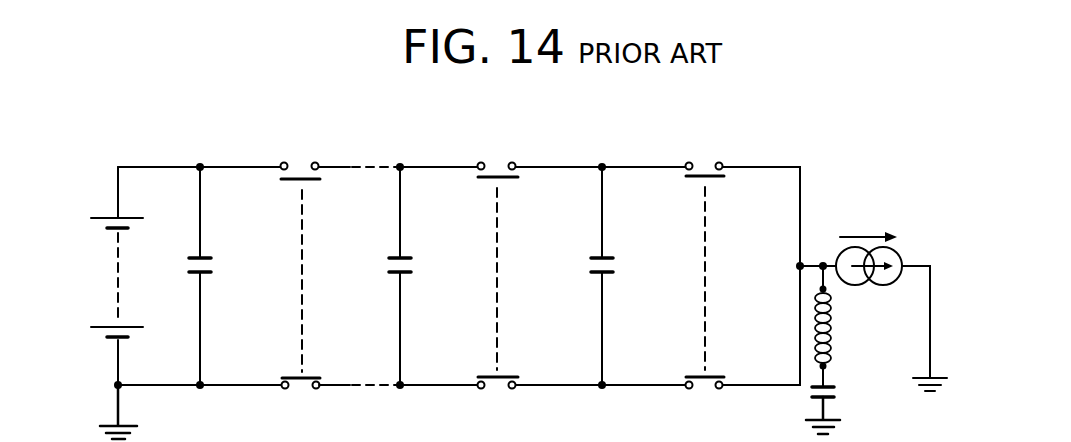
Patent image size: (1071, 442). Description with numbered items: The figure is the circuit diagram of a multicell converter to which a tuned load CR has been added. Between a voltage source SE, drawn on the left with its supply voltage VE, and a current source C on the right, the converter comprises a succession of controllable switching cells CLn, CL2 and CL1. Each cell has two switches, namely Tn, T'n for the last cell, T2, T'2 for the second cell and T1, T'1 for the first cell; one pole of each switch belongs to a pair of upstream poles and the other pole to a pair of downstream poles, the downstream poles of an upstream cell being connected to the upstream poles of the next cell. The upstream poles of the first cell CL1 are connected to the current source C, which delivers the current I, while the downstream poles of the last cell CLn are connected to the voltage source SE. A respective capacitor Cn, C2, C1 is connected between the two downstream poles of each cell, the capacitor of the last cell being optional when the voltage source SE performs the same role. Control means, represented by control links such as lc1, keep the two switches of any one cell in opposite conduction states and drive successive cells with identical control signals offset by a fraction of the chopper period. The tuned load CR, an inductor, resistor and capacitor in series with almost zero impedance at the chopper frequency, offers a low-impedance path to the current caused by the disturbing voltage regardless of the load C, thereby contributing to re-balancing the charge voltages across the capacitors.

The supply voltage VE is at (119, 197).
The voltage source SE is at (117, 262).
The capacitor of the last cell Cn is at (213, 268).
The capacitor of the second cell C2 is at (413, 268).
The capacitor of the first cell C1 is at (615, 268).
The last controllable switching cell CLn is at (323, 247).
The second controllable switching cell CL2 is at (521, 247).
The first controllable switching cell CL1 is at (725, 247).
The switch of last cell Tn is at (304, 181).
The switch of last cell T'n is at (323, 359).
The switch of second cell T2 is at (499, 179).
The switch of second cell T'2 is at (523, 358).
The switch of first cell T1 is at (707, 178).
The switch of first cell T'1 is at (726, 358).
The control link lc1 is at (705, 280).
The current source C is at (860, 285).
The output current I is at (871, 225).
The tuned load CR is at (831, 325).